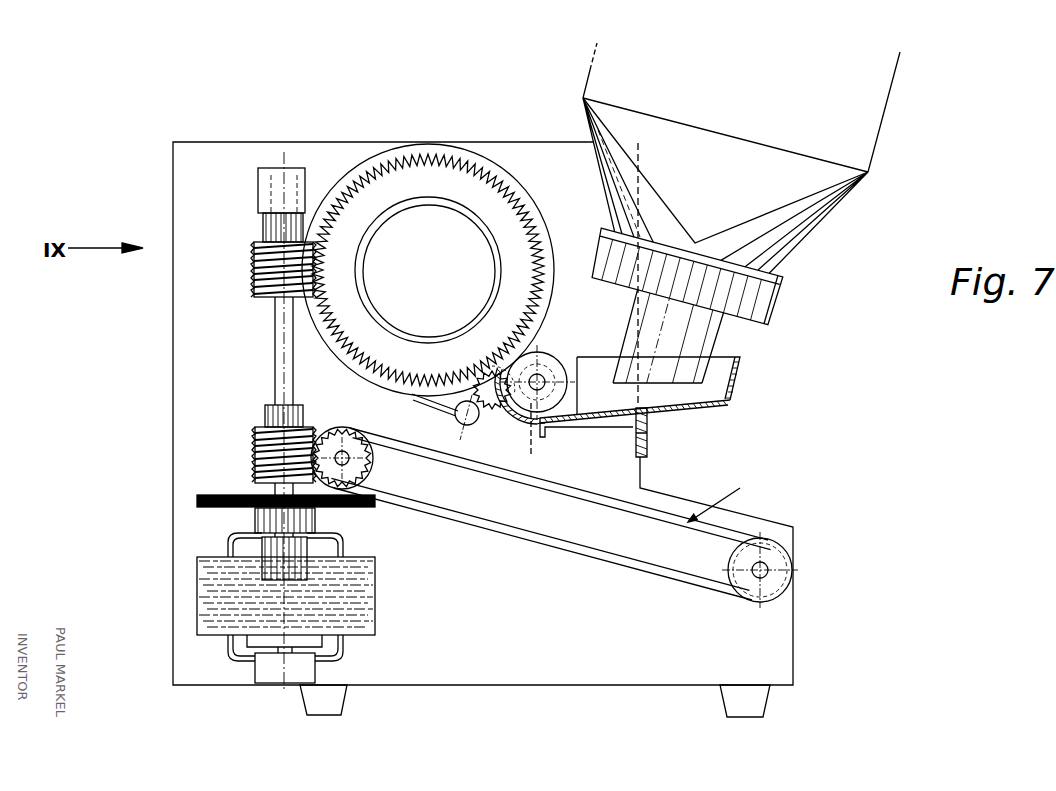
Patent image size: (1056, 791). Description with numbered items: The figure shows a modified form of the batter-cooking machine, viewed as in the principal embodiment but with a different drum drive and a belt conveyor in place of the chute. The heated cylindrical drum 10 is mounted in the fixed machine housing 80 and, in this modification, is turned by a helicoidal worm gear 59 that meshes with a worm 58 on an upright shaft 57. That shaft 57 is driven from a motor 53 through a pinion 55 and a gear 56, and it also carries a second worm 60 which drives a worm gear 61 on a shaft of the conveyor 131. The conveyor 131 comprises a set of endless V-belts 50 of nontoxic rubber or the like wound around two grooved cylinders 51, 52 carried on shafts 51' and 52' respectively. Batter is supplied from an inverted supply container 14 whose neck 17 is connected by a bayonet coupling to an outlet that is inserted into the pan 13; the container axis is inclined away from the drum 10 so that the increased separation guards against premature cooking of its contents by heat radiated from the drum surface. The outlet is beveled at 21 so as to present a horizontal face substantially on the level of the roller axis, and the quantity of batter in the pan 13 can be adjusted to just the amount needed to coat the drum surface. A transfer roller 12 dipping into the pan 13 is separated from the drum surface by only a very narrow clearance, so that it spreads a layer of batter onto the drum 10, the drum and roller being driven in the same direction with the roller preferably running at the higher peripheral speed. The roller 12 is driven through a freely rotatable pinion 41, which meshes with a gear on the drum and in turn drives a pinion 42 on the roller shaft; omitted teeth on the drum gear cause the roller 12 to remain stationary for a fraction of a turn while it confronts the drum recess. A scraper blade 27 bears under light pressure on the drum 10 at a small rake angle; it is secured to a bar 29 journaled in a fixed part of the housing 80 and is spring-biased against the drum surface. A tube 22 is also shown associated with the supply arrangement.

The drum 10 is at (428, 235).
The helicoidal worm gear 59 is at (438, 162).
The machine housing 80 is at (210, 146).
The supply container 14 is at (888, 85).
The neck 17 is at (783, 272).
The feed tube 22 is at (604, 356).
The transfer roller 12 is at (548, 358).
The pan 13 is at (680, 408).
The beveled face 21 is at (710, 401).
The pinion 41 is at (488, 410).
The pinion 42 is at (533, 427).
The scraper blade 27 is at (425, 401).
The bar 29 is at (460, 424).
The grooved cylinder 51 is at (341, 434).
The shaft 51' is at (367, 463).
The endless V-belts 50 is at (612, 545).
The conveyor 131 is at (731, 501).
The grooved cylinder 52 is at (796, 570).
The shaft 52' is at (803, 591).
The gear 56 is at (197, 503).
The pinion 55 is at (318, 515).
The motor 53 is at (376, 600).
The upright shaft 57 is at (275, 349).
The worm 58 is at (258, 262).
The worm 60 is at (257, 452).
The worm gear 61 is at (268, 400).